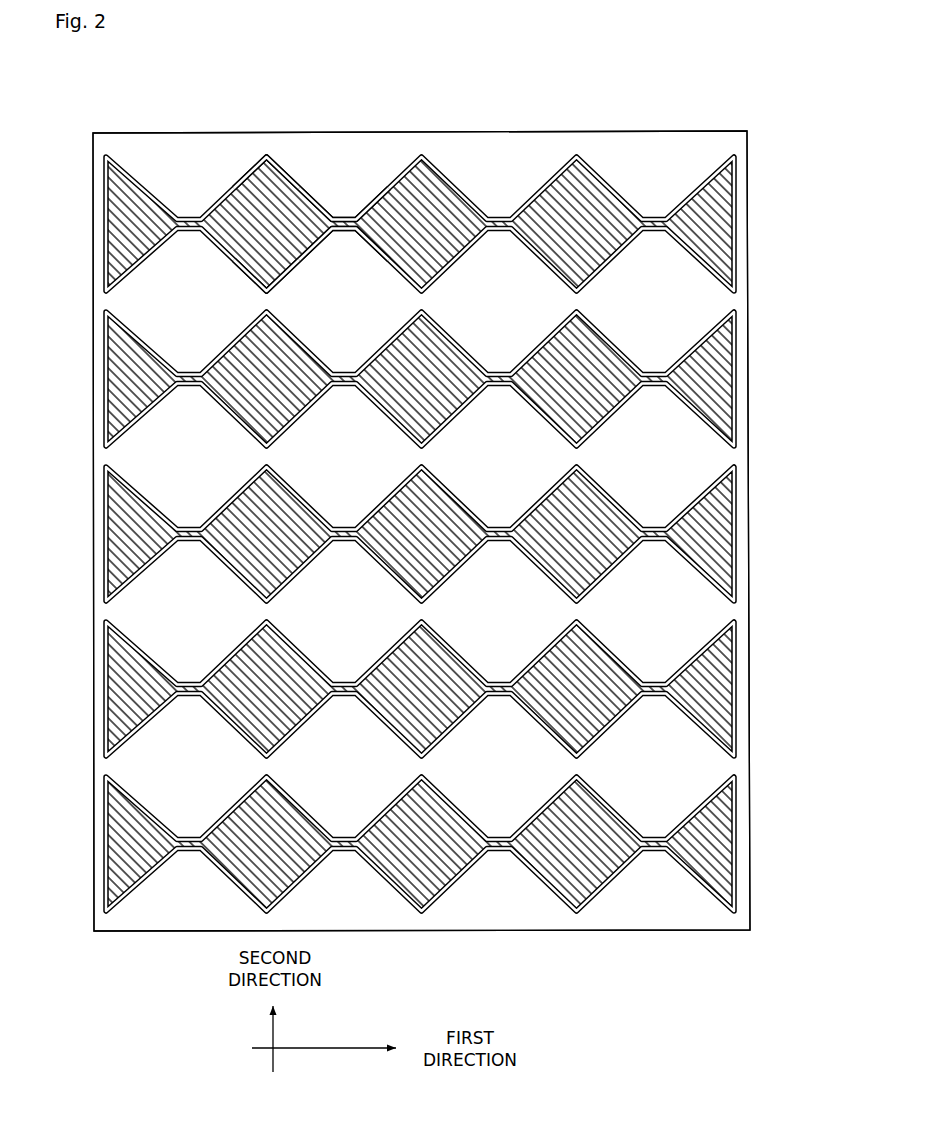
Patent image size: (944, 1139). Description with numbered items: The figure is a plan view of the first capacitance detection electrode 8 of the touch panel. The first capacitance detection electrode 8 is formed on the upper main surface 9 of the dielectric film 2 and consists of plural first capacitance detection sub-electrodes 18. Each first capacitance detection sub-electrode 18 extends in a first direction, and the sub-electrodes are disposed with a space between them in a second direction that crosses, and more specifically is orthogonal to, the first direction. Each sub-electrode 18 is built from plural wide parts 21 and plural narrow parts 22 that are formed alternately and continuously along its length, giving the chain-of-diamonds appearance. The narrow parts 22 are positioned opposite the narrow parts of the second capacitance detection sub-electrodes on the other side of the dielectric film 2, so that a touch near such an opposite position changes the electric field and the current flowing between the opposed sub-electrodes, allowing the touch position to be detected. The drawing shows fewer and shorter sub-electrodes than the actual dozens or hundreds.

The dielectric film 2 is at (752, 147).
The upper main surface 9 is at (657, 143).
The first capacitance detection electrode 8 is at (474, 259).
The first capacitance detection sub-electrode 18 is at (455, 259).
The wide part 21 is at (265, 154).
The narrow part 22 is at (343, 217).